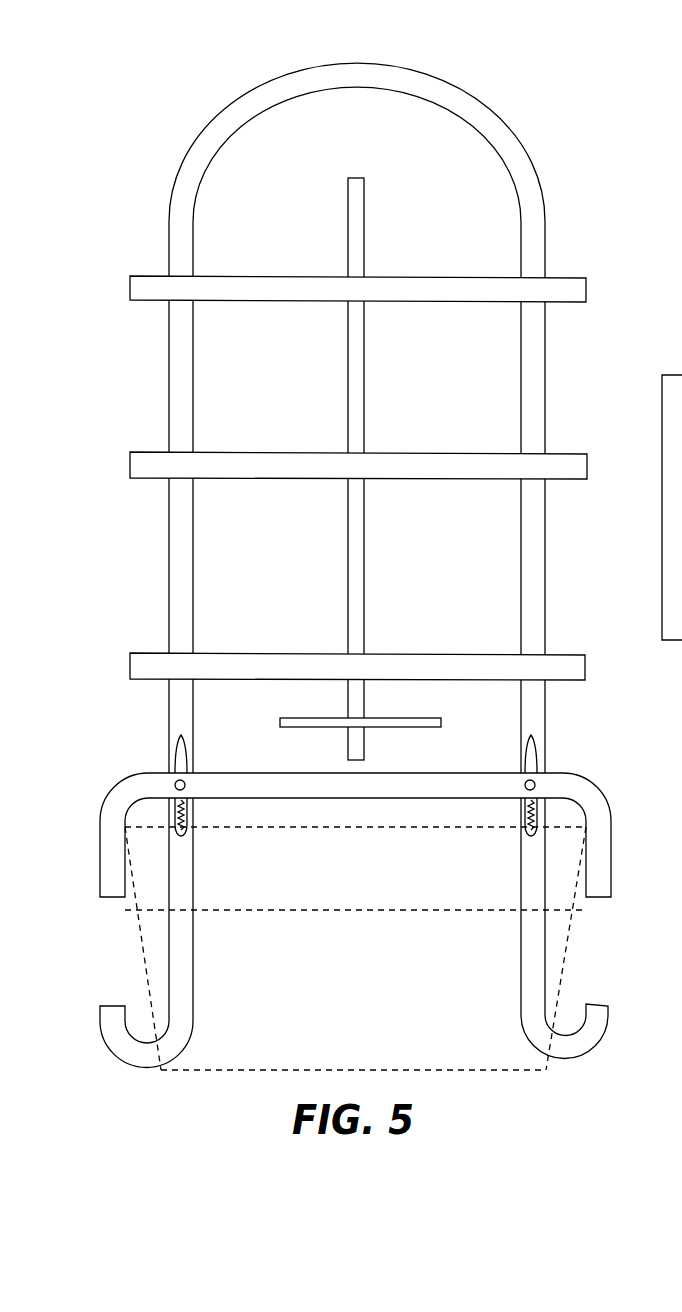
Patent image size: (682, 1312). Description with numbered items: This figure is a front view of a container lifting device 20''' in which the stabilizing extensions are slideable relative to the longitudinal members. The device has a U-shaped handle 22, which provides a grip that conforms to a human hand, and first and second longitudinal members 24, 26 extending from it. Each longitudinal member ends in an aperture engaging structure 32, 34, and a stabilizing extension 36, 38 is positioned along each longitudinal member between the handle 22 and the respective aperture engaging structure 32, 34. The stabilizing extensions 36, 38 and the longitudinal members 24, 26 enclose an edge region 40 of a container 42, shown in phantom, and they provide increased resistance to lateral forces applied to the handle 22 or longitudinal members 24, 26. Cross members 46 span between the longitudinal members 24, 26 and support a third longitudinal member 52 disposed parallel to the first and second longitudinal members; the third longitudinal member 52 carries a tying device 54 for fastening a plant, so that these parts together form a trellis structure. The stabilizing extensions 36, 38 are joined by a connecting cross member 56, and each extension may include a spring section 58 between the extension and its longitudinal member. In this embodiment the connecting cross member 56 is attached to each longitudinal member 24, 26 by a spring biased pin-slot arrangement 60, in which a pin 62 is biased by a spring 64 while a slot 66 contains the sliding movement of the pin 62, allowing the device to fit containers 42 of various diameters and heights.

The container lifting device 20''' is at (625, 60).
The U-shaped handle 22 is at (353, 73).
The first longitudinal member 24 is at (180, 352).
The second longitudinal member 26 is at (537, 356).
The aperture engaging structure 32 is at (113, 1010).
The aperture engaging structure 34 is at (599, 1006).
The stabilizing extension 36 is at (605, 855).
The stabilizing extension 38 is at (110, 883).
The edge region 40 is at (320, 863).
The container 42 is at (424, 1070).
The cross members 46 is at (572, 283).
The third longitudinal member 52 is at (357, 227).
The tying device 54 is at (428, 719).
The connecting cross member 56 is at (277, 777).
The spring section 58 is at (133, 754).
The spring biased pin-slot arrangement 60 is at (625, 706).
The pin 62 is at (533, 784).
The spring 64 is at (527, 806).
The slot 66 is at (535, 745).